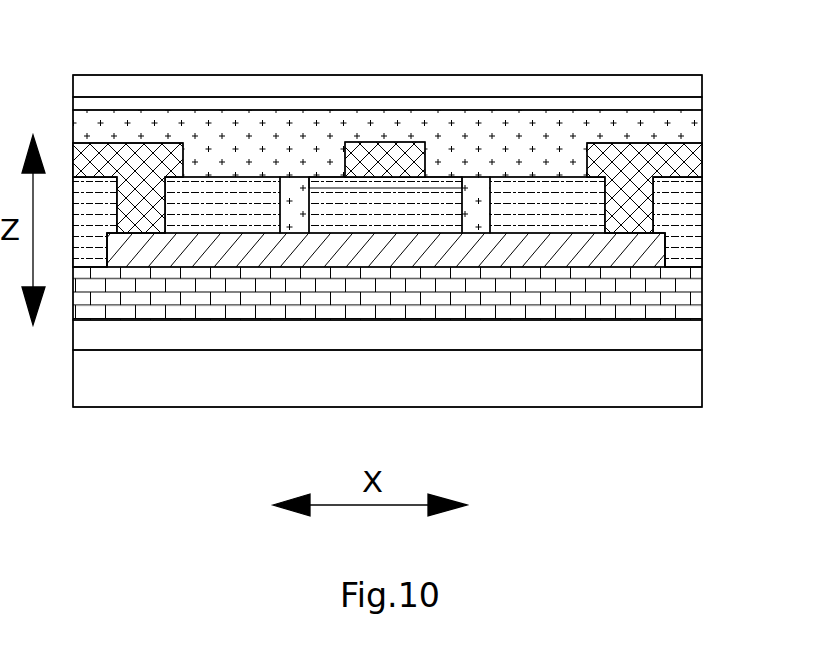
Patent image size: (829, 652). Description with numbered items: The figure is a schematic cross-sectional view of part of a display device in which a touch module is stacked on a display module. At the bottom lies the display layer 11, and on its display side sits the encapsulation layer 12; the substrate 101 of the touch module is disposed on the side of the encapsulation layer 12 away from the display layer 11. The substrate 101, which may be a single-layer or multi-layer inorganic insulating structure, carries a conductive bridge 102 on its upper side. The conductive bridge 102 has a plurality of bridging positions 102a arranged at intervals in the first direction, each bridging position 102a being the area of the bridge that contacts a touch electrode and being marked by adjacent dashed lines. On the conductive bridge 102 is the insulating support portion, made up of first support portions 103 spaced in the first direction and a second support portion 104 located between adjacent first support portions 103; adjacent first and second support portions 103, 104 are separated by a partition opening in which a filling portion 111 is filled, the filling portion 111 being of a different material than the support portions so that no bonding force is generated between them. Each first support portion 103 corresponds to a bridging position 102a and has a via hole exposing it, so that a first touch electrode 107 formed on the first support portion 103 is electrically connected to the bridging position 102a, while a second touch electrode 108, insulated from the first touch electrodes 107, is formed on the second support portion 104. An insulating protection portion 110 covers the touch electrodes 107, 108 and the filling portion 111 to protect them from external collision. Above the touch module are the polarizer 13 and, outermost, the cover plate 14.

The display layer 11 is at (432, 378).
The encapsulation layer 12 is at (433, 335).
The polarizer 13 is at (410, 105).
The cover plate 14 is at (400, 67).
The substrate 101 is at (431, 293).
The conductive bridge 102 is at (386, 346).
The bridging position 102a is at (382, 347).
The first support portion 103 is at (387, 141).
The second support portion 104 is at (399, 104).
The first touch electrode 107 is at (387, 122).
The second touch electrode 108 is at (382, 96).
The insulating protection portion 110 is at (387, 94).
The filling portion 111 is at (335, 315).